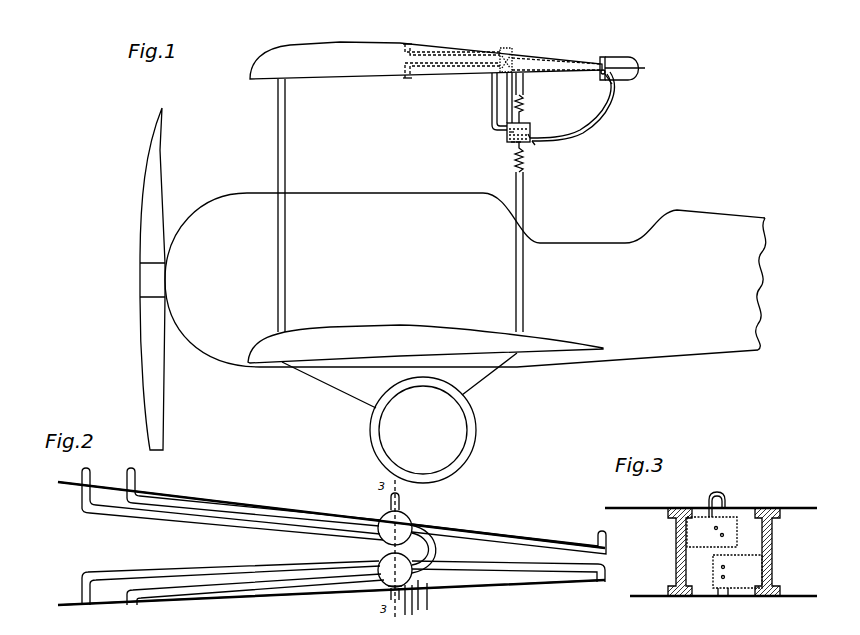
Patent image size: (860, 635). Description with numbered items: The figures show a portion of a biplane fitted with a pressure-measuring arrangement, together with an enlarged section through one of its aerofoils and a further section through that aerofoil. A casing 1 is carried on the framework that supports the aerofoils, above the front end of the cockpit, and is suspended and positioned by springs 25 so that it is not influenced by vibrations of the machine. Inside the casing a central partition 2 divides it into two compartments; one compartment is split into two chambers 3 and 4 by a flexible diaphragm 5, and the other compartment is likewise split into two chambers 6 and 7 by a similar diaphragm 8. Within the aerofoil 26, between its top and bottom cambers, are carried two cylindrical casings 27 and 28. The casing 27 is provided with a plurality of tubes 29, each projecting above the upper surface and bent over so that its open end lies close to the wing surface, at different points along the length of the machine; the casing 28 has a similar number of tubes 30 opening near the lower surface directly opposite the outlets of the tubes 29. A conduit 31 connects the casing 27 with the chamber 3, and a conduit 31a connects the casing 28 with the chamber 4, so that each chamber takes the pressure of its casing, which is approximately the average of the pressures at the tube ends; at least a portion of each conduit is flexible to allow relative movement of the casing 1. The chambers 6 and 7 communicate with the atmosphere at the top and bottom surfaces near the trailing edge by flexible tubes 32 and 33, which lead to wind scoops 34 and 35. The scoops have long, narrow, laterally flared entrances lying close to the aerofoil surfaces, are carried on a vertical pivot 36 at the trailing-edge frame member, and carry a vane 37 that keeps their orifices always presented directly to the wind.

In FIG. 1, the casing 1 is at (540, 141).
In FIG. 1, the central partition 2 is at (507, 133).
In FIG. 1, the chamber 3 is at (532, 137).
In FIG. 1, the chamber 4 is at (527, 126).
In FIG. 1, the flexible diaphragm 5 is at (530, 131).
In FIG. 1, the chamber 6 is at (507, 138).
In FIG. 1, the chamber 7 is at (512, 143).
In FIG. 1, the diaphragm 8 is at (509, 145).
In FIG. 1, the springs 25 is at (523, 163).
In FIG. 1, the aerofoil 26 is at (383, 73).
In FIG. 2, the aerofoil 26 is at (331, 543).
In FIG. 3, the aerofoil 26 is at (711, 544).
In FIG. 1, the cylindrical casing 27 is at (506, 60).
In FIG. 2, the cylindrical casing 27 is at (412, 523).
In FIG. 3, the cylindrical casing 27 is at (712, 532).
In FIG. 1, the cylindrical casing 28 is at (506, 62).
In FIG. 2, the cylindrical casing 28 is at (422, 557).
In FIG. 3, the cylindrical casing 28 is at (737, 571).
In FIG. 1, the tubes 29 is at (478, 47).
In FIG. 2, the tubes 29 is at (480, 541).
In FIG. 3, the tubes 29 is at (711, 500).
In FIG. 1, the tubes 30 is at (465, 70).
In FIG. 2, the tubes 30 is at (495, 572).
In FIG. 3, the tubes 30 is at (720, 598).
In FIG. 1, the conduit 31 is at (492, 117).
In FIG. 2, the conduit 31 is at (428, 604).
In FIG. 1, the conduit 31a is at (507, 99).
In FIG. 2, the conduit 31a is at (414, 612).
In FIG. 1, the flexible tube 32 is at (592, 115).
In FIG. 1, the flexible tube 33 is at (620, 86).
In FIG. 1, the wind scoop 34 is at (605, 62).
In FIG. 1, the wind scoop 35 is at (601, 78).
In FIG. 1, the vertical pivot 36 is at (637, 68).
In FIG. 2, the vertical pivot 36 is at (386, 588).
In FIG. 1, the vane 37 is at (638, 60).